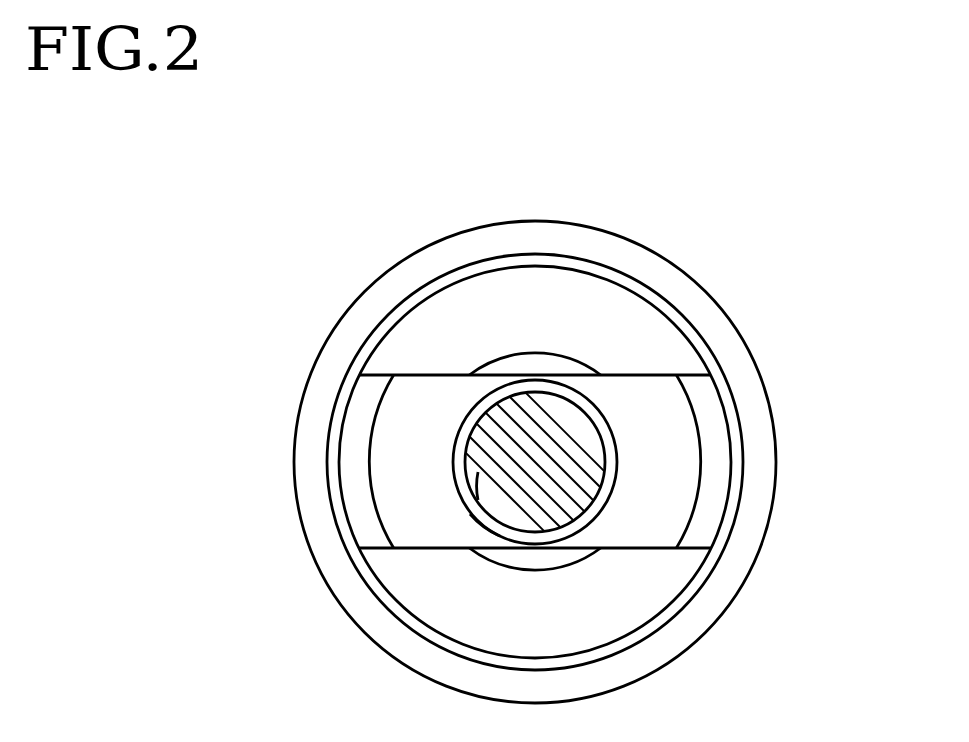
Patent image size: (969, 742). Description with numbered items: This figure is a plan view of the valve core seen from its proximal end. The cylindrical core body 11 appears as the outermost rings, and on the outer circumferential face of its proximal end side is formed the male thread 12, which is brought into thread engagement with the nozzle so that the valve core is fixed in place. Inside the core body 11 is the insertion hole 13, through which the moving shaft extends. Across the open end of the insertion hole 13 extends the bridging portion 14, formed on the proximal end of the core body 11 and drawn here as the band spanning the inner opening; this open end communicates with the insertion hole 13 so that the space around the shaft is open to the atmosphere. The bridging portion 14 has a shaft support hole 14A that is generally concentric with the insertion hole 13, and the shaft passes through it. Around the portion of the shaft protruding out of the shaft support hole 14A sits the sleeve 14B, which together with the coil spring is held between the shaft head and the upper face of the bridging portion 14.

The core body 11 is at (532, 217).
The male thread 12 is at (560, 476).
The insertion hole 13 is at (527, 363).
The bridging portion 14 is at (387, 412).
The shaft support hole 14A is at (478, 487).
The sleeve 14B is at (485, 524).